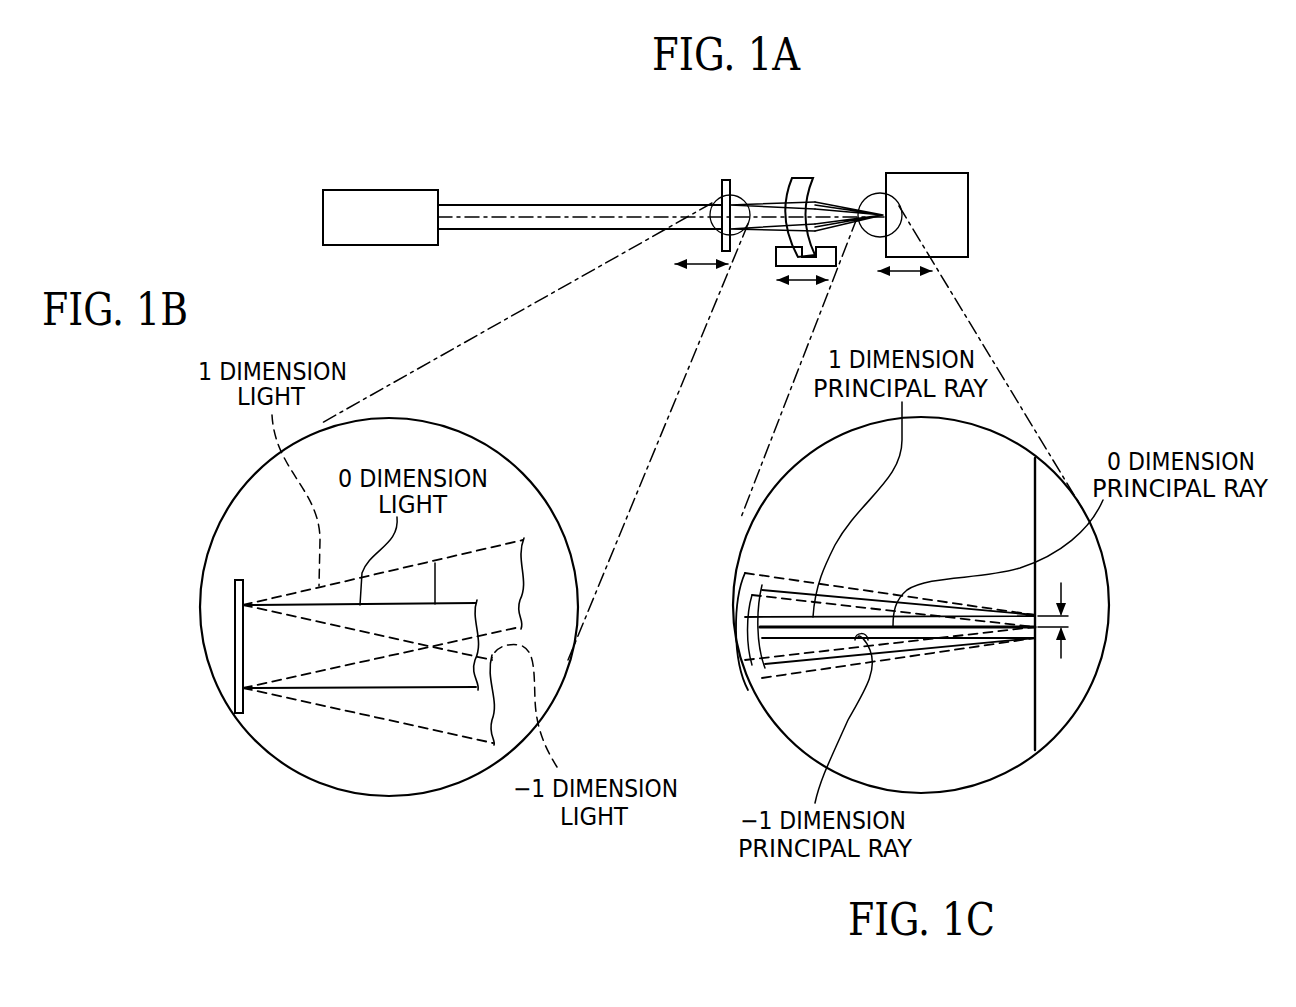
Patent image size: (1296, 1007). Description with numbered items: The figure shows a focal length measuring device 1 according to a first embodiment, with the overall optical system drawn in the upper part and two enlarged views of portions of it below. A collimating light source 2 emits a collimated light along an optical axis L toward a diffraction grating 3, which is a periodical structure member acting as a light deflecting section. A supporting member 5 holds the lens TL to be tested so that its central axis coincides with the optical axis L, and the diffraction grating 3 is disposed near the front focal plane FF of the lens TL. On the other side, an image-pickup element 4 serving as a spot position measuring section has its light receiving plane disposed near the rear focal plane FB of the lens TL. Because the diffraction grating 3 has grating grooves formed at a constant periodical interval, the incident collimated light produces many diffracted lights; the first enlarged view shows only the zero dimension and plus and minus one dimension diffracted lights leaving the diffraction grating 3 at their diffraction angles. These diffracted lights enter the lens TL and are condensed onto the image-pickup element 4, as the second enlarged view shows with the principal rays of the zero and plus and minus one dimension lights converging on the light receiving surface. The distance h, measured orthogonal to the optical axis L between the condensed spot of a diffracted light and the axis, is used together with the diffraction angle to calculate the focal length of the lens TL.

In FIG. 1A, the focal length measuring device 1 is at (548, 170).
In FIG. 1A, the collimating light source 2 is at (388, 190).
In FIG. 1A, the diffraction grating 3 is at (722, 190).
In FIG. 1B, the diffraction grating 3 is at (240, 580).
In FIG. 1A, the image-pickup element 4 is at (968, 203).
In FIG. 1C, the image-pickup element 4 is at (1033, 722).
In FIG. 1A, the supporting member 5 is at (777, 252).
In FIG. 1A, the optical axis L is at (620, 205).
In FIG. 1A, the front focal plane FF is at (708, 207).
In FIG. 1A, the lens to be tested TL is at (801, 201).
In FIG. 1A, the rear focal plane FB is at (880, 189).
In FIG. 1C, the distance of diffracted light spot from optical axis h is at (1065, 620).